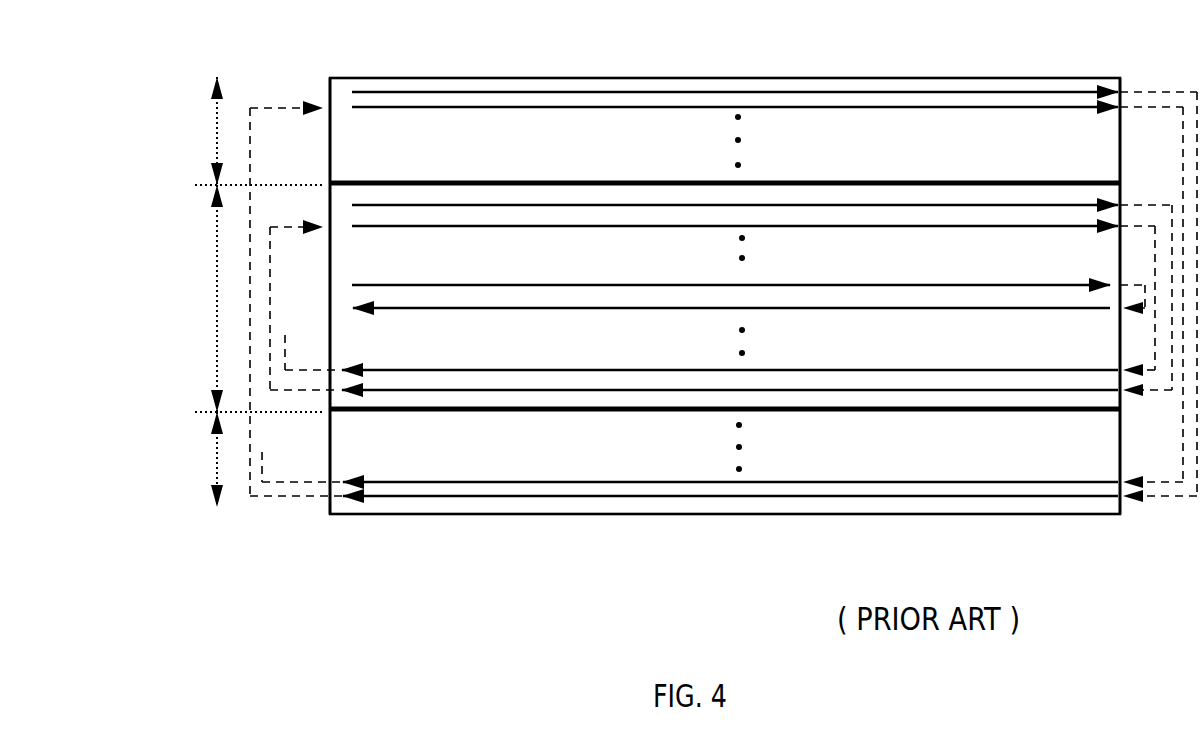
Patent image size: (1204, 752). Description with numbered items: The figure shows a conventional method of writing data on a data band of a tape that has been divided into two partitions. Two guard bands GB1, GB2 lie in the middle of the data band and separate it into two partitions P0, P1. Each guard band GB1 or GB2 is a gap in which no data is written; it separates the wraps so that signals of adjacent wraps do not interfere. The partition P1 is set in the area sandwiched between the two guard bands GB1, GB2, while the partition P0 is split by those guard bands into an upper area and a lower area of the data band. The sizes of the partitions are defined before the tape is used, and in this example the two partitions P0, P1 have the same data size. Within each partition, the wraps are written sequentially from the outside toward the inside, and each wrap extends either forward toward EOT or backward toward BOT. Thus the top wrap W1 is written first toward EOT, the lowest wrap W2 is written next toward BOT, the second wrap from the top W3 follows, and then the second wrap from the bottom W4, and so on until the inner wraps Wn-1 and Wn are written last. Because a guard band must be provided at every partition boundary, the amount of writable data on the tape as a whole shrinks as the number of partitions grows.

The wrap W1 is at (570, 92).
The wrap W2 is at (605, 390).
The wrap W3 is at (654, 107).
The wrap W4 is at (543, 370).
The wrap Wn-1 is at (810, 285).
The wrap Wn is at (810, 308).
The first guard band GB1 is at (917, 181).
The second guard band GB2 is at (915, 411).
The partition P0 is at (217, 292).
The partition P1 is at (217, 298).
The beginning of tape BOT is at (341, 265).
The end of tape EOT is at (1112, 265).